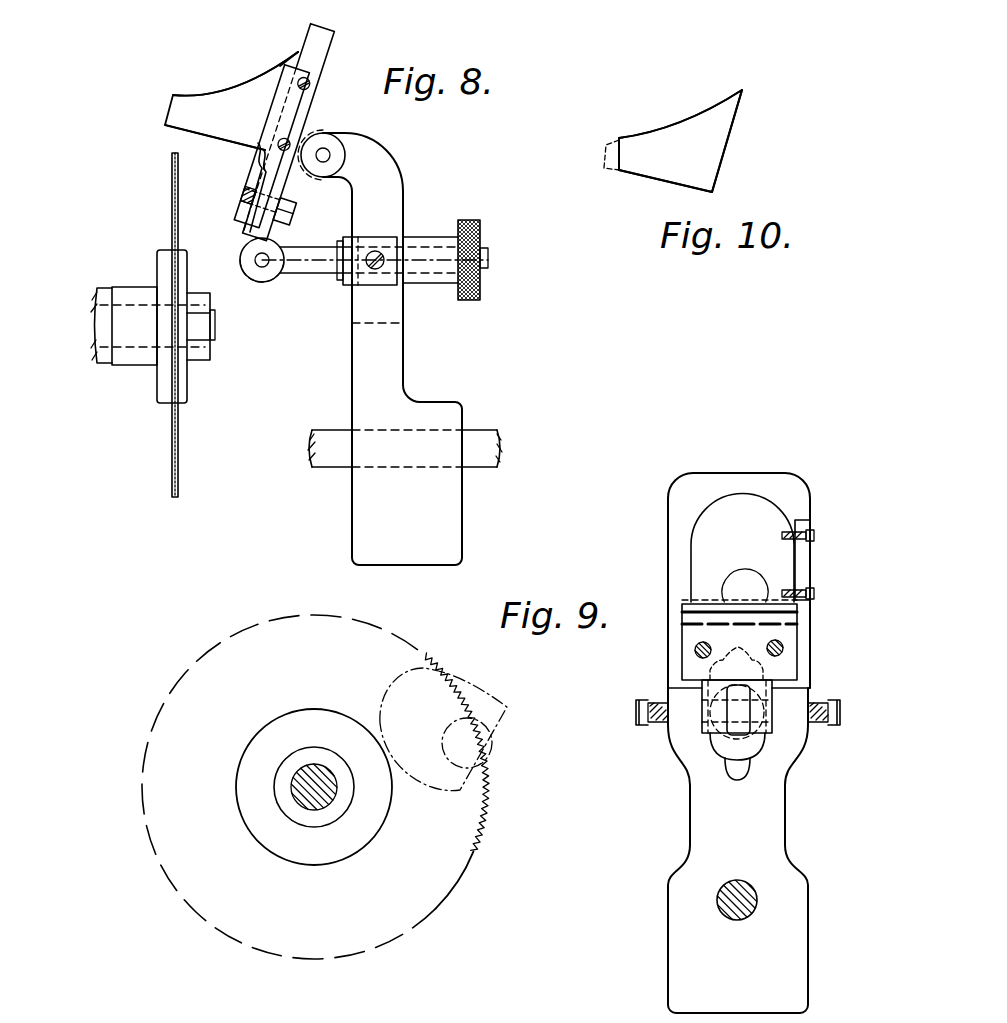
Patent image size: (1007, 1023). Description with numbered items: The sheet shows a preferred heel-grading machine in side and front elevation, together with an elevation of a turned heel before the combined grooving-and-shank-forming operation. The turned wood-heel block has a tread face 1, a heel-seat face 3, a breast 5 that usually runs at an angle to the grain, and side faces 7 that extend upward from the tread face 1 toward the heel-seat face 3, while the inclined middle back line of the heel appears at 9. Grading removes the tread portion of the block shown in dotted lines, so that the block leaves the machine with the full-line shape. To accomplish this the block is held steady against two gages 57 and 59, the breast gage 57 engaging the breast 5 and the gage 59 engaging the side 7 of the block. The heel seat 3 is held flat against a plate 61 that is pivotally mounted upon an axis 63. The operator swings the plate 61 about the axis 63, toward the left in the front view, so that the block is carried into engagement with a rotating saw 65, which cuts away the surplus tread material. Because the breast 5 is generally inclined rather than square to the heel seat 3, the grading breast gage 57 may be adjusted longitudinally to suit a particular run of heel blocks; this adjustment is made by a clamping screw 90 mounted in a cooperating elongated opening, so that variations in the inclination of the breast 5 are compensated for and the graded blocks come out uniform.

In FIG. 10, the tread face 1 is at (598, 142).
In FIG. 8, the heel-seat face 3 is at (297, 55).
In FIG. 10, the heel-seat face 3 is at (727, 159).
In FIG. 8, the breast 5 is at (207, 138).
In FIG. 10, the breast 5 is at (660, 182).
In FIG. 9, the breast 5 is at (712, 612).
In FIG. 8, the side faces 7 is at (231, 101).
In FIG. 10, the side faces 7 is at (680, 141).
In FIG. 9, the side faces 7 is at (742, 548).
In FIG. 8, the middle back line 9 is at (255, 77).
In FIG. 10, the middle back line 9 is at (702, 112).
In FIG. 9, the middle back line 9 is at (745, 513).
In FIG. 8, the breast gage 57 is at (256, 160).
In FIG. 9, the breast gage 57 is at (686, 604).
In FIG. 8, the gage 59 is at (283, 103).
In FIG. 9, the gage 59 is at (806, 562).
In FIG. 8, the plate 61 is at (322, 41).
In FIG. 9, the plate 61 is at (672, 513).
In FIG. 8, the axis 63 is at (328, 462).
In FIG. 9, the axis 63 is at (717, 902).
In FIG. 8, the rotating saw 65 is at (180, 492).
In FIG. 9, the rotating saw 65 is at (425, 660).
In FIG. 8, the clamping screw 90 is at (297, 217).
In FIG. 9, the clamping screw 90 is at (698, 652).